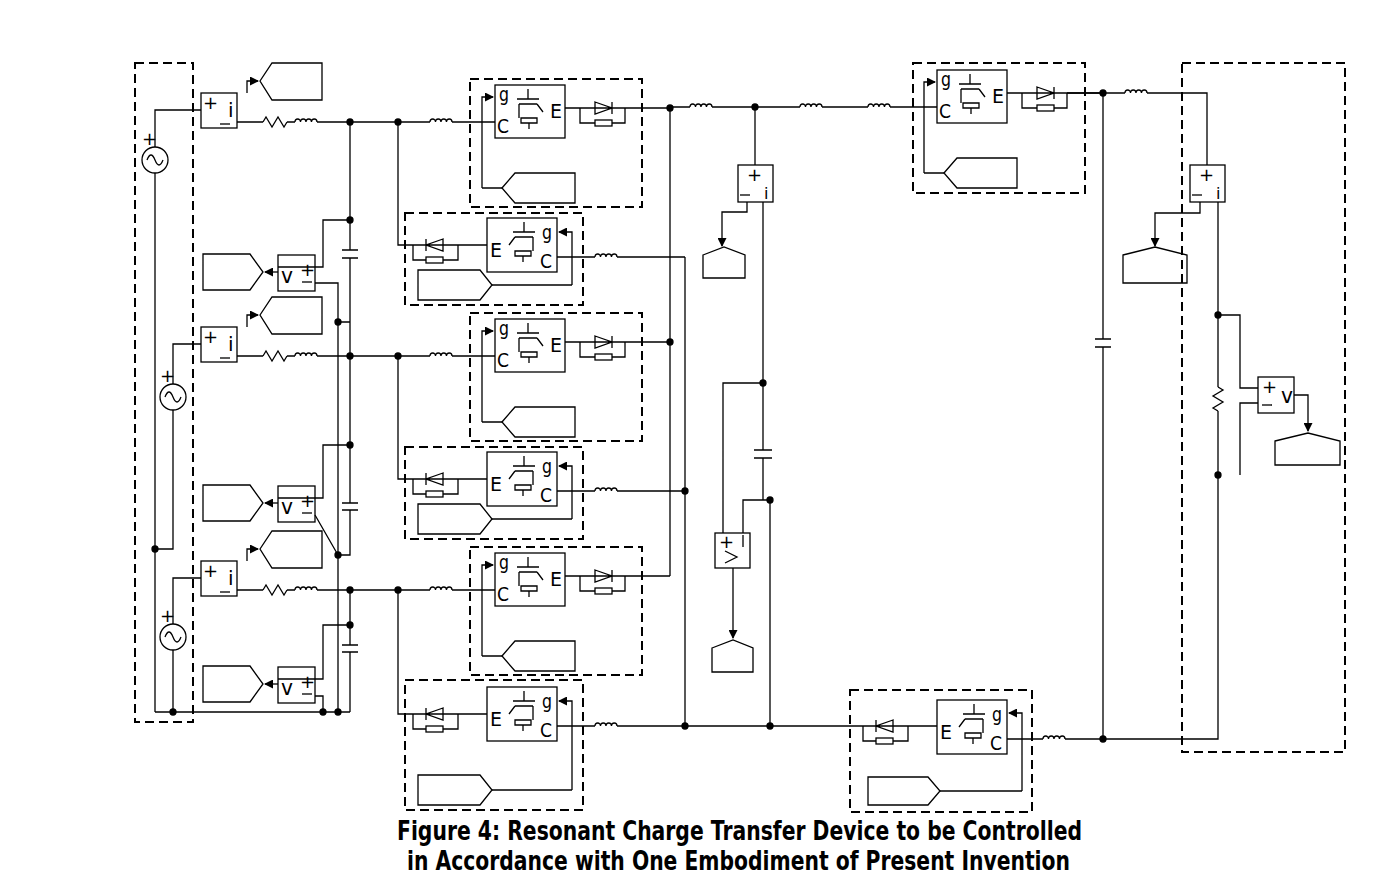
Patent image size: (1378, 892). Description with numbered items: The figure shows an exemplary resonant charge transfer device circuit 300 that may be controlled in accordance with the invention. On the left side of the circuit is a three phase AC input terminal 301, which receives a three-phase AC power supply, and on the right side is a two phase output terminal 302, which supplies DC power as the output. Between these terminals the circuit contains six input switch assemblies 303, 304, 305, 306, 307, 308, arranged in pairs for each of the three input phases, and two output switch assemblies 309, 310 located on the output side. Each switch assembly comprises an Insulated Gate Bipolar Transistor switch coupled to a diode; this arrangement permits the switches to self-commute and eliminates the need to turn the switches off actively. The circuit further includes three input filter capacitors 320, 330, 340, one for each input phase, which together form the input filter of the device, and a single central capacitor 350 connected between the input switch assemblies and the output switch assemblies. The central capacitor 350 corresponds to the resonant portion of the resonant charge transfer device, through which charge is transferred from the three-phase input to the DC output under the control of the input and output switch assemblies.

The resonant charge transfer device circuit 300 is at (409, 41).
The three phase AC input terminal 301 is at (242, 408).
The two phase output terminal 302 is at (1224, 425).
The input switch assembly 303 is at (570, 131).
The input switch assembly 304 is at (541, 213).
The input switch assembly 305 is at (570, 365).
The input switch assembly 306 is at (541, 447).
The input switch assembly 307 is at (570, 599).
The input switch assembly 308 is at (541, 700).
The output switch assembly 309 is at (1008, 115).
The output switch assembly 310 is at (976, 737).
The input filter capacitor 320 is at (362, 239).
The input filter capacitor 330 is at (365, 457).
The input filter capacitor 340 is at (368, 651).
The central capacitor 350 is at (767, 554).